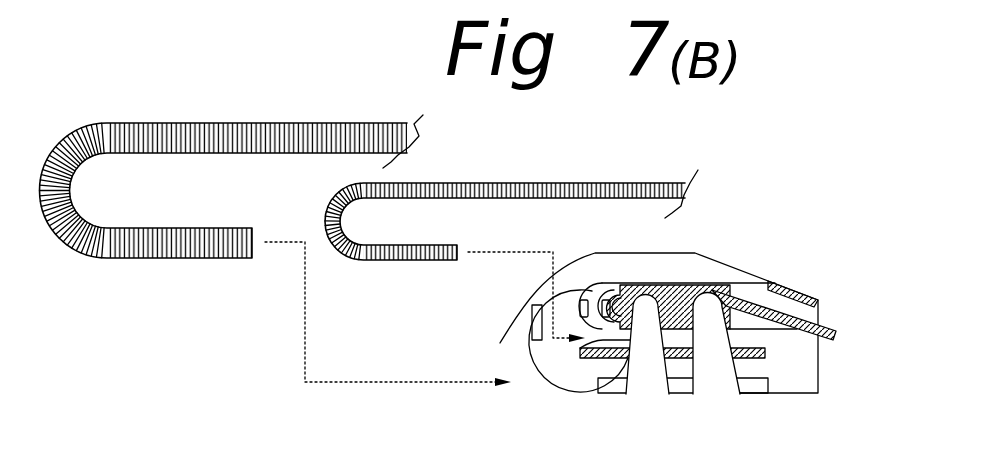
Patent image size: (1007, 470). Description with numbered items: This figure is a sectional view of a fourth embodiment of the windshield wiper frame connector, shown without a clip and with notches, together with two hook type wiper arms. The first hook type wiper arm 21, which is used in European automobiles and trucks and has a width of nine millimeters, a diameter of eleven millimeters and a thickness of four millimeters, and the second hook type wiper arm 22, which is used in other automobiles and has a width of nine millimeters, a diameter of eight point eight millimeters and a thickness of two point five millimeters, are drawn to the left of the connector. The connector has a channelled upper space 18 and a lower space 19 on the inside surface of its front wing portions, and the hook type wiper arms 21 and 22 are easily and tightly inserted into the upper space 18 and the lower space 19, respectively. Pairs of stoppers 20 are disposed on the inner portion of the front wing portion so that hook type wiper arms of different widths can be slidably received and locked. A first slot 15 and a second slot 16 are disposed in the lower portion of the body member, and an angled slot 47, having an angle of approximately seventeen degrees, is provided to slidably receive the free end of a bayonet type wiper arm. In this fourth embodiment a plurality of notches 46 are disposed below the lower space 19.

The first slot 15 is at (664, 285).
The second slot 16 is at (718, 290).
The upper space 18 is at (578, 350).
The lower space 19 is at (588, 363).
The stoppers 20 is at (530, 337).
The first hook type wiper arm 21 is at (188, 125).
The second hook type wiper arm 22 is at (517, 183).
The notches 46 is at (625, 392).
The angled slot 47 is at (812, 313).